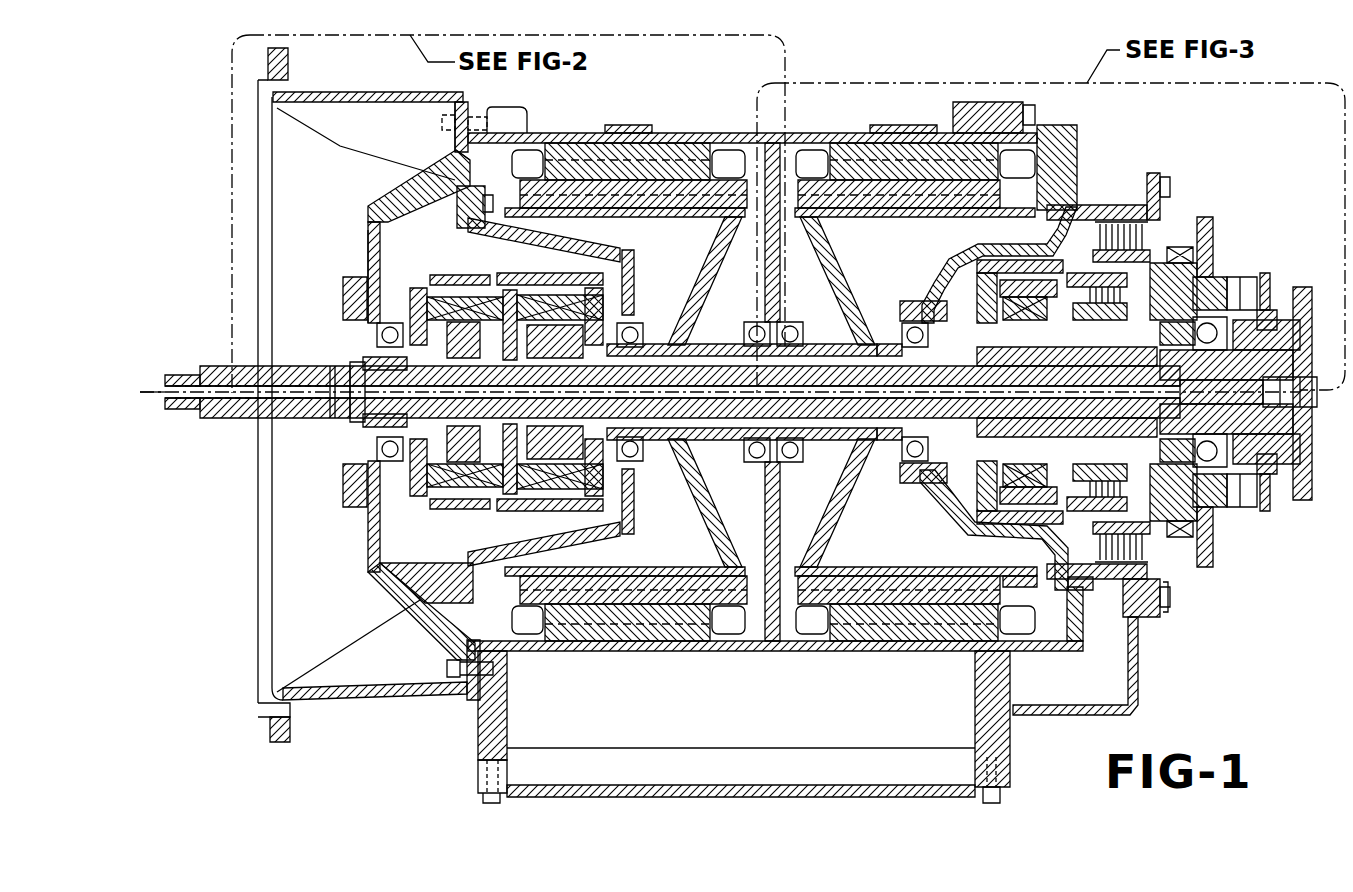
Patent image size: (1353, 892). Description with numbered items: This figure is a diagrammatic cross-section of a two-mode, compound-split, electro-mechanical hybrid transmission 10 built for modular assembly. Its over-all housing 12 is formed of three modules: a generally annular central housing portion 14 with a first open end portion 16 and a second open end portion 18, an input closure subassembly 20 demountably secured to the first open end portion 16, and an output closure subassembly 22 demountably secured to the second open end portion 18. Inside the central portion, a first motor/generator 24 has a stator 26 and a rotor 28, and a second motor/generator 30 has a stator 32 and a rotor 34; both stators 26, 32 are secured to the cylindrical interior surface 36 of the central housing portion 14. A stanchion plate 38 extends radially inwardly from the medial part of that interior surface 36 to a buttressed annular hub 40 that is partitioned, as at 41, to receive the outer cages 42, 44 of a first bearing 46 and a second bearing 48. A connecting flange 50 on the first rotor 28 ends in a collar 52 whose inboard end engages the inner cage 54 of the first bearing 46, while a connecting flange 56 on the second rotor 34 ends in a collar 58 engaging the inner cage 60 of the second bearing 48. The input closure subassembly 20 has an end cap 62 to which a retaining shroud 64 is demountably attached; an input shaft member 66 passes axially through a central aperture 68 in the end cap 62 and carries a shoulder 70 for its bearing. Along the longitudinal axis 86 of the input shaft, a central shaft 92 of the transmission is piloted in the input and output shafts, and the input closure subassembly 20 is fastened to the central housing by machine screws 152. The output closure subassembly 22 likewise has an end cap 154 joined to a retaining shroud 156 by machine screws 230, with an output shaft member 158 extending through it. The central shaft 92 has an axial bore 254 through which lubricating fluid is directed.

The hybrid transmission 10 is at (200, 165).
The housing 12 is at (475, 735).
The central housing portion 14 is at (725, 133).
The first open end portion 16 is at (478, 174).
The second open end portion 18 is at (1015, 228).
The input closure subassembly 20 is at (377, 584).
The output closure subassembly 22 is at (1185, 218).
The first motor/generator 24 is at (510, 183).
The stator 26 is at (573, 152).
The rotor 28 is at (670, 190).
The second motor/generator 30 is at (1048, 172).
The stator 32 is at (862, 150).
The rotor 34 is at (900, 190).
The interior surface 36 is at (458, 160).
The stanchion plate 38 is at (762, 300).
The buttressed annular hub 40 is at (805, 320).
The partition 41 is at (790, 265).
The outer cage 42 is at (735, 330).
The outer cage 44 is at (797, 328).
The first bearing 46 is at (742, 330).
The second bearing 48 is at (850, 470).
The connecting flange 50 is at (715, 530).
The collar 52 is at (650, 442).
The inner cage 54 is at (748, 430).
The connecting flange 56 is at (812, 475).
The collar 58 is at (897, 442).
The inner cage 60 is at (800, 432).
The end cap 62 is at (368, 257).
The retaining shroud 64 is at (555, 540).
The input shaft member 66 is at (215, 378).
The central aperture 68 is at (348, 407).
The shoulder 70 is at (386, 445).
The longitudinal axis 86 is at (160, 393).
The central shaft 92 is at (462, 432).
The machine screws 152 is at (450, 665).
The end cap 154 is at (1212, 250).
The retaining shroud 156 is at (1138, 660).
The output shaft member 158 is at (1240, 420).
The machine screws 230 is at (1172, 597).
The axial bore 254 is at (205, 400).